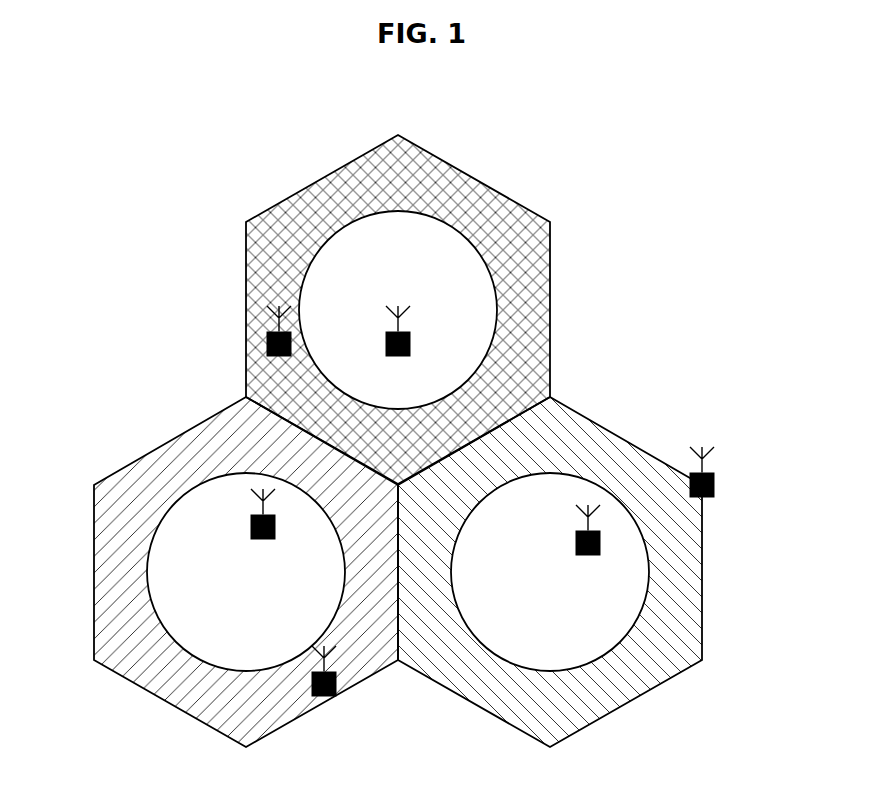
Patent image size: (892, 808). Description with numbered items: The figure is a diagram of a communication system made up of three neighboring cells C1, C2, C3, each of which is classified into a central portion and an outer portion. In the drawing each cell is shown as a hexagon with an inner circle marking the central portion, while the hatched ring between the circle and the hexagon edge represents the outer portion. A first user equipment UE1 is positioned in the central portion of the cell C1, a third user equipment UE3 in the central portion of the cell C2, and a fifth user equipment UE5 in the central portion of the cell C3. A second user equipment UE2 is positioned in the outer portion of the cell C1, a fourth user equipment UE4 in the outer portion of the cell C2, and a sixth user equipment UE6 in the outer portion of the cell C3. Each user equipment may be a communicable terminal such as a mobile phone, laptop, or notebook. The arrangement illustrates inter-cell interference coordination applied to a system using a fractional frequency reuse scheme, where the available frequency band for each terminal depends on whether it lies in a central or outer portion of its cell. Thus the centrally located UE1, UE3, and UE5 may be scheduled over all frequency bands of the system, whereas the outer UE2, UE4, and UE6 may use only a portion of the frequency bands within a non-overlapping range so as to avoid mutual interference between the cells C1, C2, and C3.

The first cell C1 is at (183, 434).
The second cell C2 is at (613, 431).
The third cell C3 is at (473, 177).
The first user equipment UE1 is at (262, 530).
The second user equipment UE2 is at (294, 673).
The third user equipment UE3 is at (586, 545).
The fourth user equipment UE4 is at (731, 474).
The fifth user equipment UE5 is at (397, 347).
The sixth user equipment UE6 is at (278, 347).